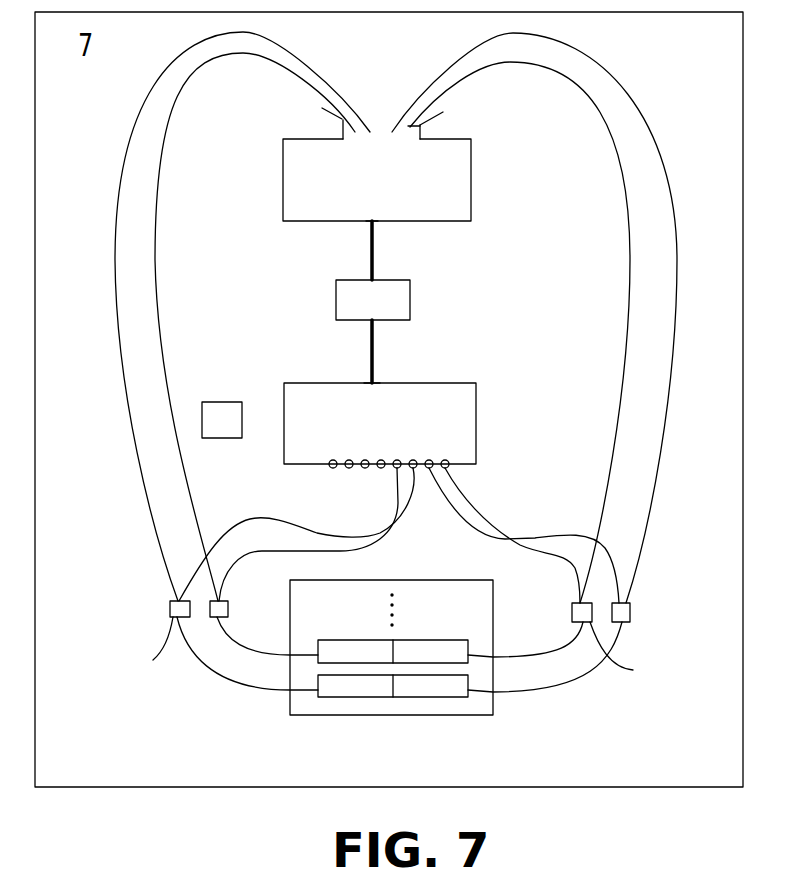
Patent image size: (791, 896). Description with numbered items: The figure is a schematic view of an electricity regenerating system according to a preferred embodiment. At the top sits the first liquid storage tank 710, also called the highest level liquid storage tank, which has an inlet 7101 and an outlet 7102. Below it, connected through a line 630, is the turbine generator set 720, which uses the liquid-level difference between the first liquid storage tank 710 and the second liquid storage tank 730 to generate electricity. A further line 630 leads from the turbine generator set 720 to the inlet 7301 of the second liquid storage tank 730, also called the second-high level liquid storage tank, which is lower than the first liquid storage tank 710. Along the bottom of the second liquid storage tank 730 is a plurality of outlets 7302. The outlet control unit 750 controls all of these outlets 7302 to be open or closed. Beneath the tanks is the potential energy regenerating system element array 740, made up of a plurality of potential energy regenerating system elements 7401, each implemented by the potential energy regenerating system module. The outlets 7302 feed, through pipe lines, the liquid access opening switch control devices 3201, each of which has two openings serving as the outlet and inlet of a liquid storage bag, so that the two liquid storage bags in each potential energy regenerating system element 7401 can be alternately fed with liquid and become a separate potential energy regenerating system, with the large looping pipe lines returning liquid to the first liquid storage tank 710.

The first liquid storage tank 710 is at (458, 185).
The inlet 7101 is at (443, 112).
The outlet 7102 is at (367, 228).
The connection line 630 is at (374, 252).
The turbine generator set 720 is at (410, 308).
The inlet 7301 is at (372, 380).
The second liquid storage tank 730 is at (477, 433).
The outlets 7302 is at (445, 460).
The outlet control unit 750 is at (220, 402).
The potential energy regenerating system element array 740 is at (391, 647).
The potential energy regenerating system element 7401 is at (352, 700).
The liquid access opening switch control device 3201 is at (212, 617).